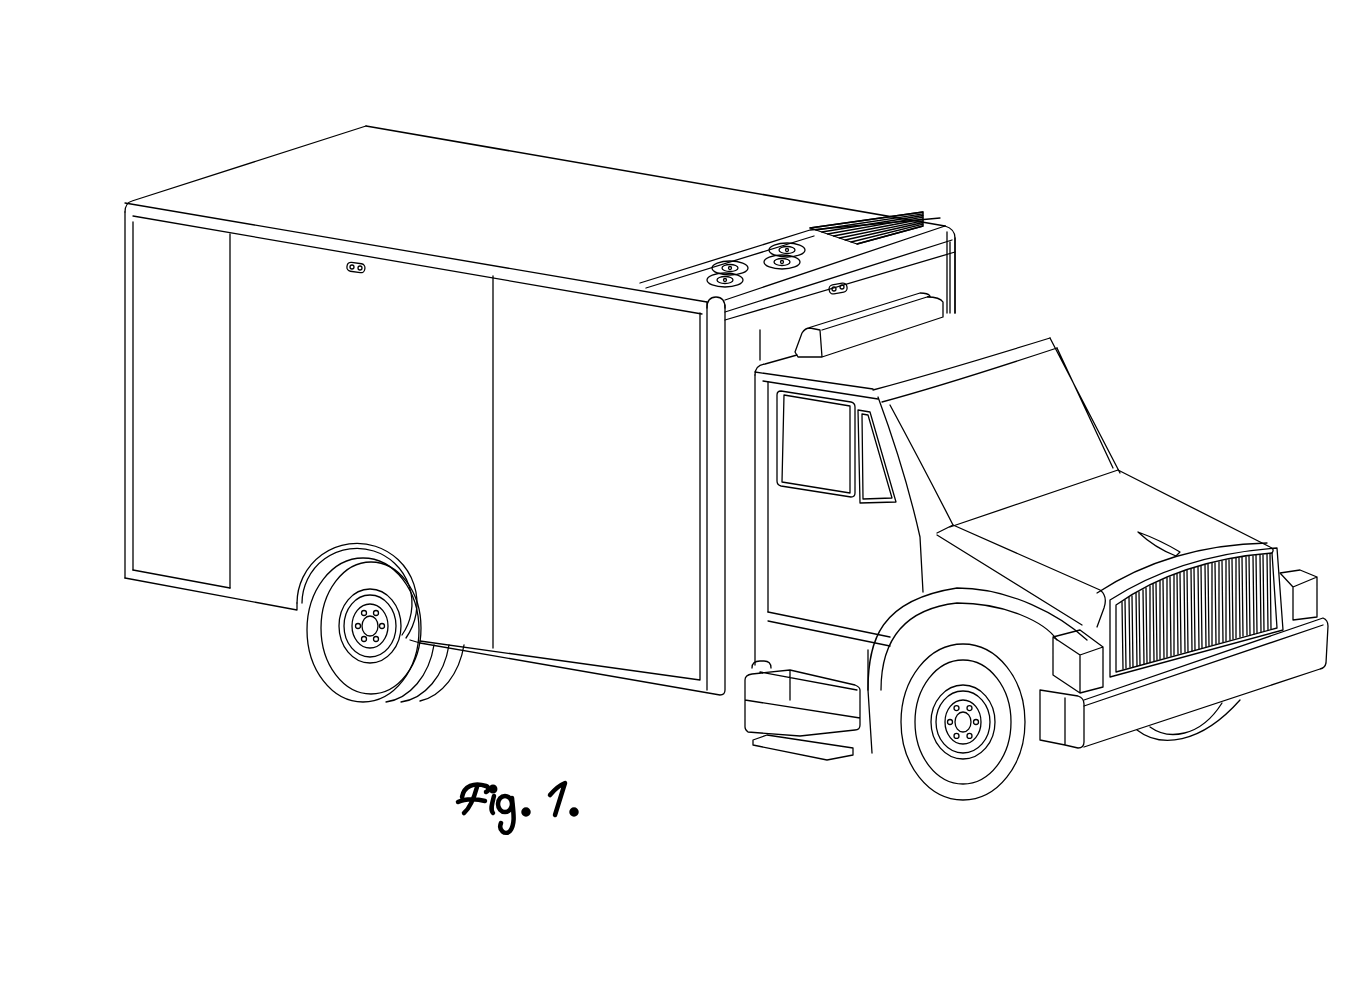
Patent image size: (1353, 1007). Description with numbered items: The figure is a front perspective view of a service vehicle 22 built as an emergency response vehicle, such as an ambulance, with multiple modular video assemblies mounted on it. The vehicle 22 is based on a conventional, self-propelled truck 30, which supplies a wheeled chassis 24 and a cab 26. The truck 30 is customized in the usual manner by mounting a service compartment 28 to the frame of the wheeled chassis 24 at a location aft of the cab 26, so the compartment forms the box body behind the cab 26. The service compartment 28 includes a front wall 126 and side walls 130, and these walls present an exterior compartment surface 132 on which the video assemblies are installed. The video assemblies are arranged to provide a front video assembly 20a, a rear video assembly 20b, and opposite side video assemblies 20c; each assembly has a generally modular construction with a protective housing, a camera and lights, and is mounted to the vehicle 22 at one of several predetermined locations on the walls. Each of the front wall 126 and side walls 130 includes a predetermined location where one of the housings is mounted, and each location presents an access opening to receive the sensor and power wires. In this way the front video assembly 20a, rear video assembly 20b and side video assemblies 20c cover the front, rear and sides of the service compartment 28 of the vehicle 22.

The front video assembly 20a is at (852, 290).
The rear video assembly 20b is at (255, 164).
The side video assemblies 20c is at (612, 164).
The service vehicle 22 is at (1020, 163).
The wheeled chassis 24 is at (350, 640).
The cab 26 is at (1012, 333).
The service compartment 28 is at (265, 570).
The truck 30 is at (1152, 505).
The front wall 126 is at (937, 260).
The side walls 130 is at (540, 310).
The exterior compartment surface 132 is at (753, 327).